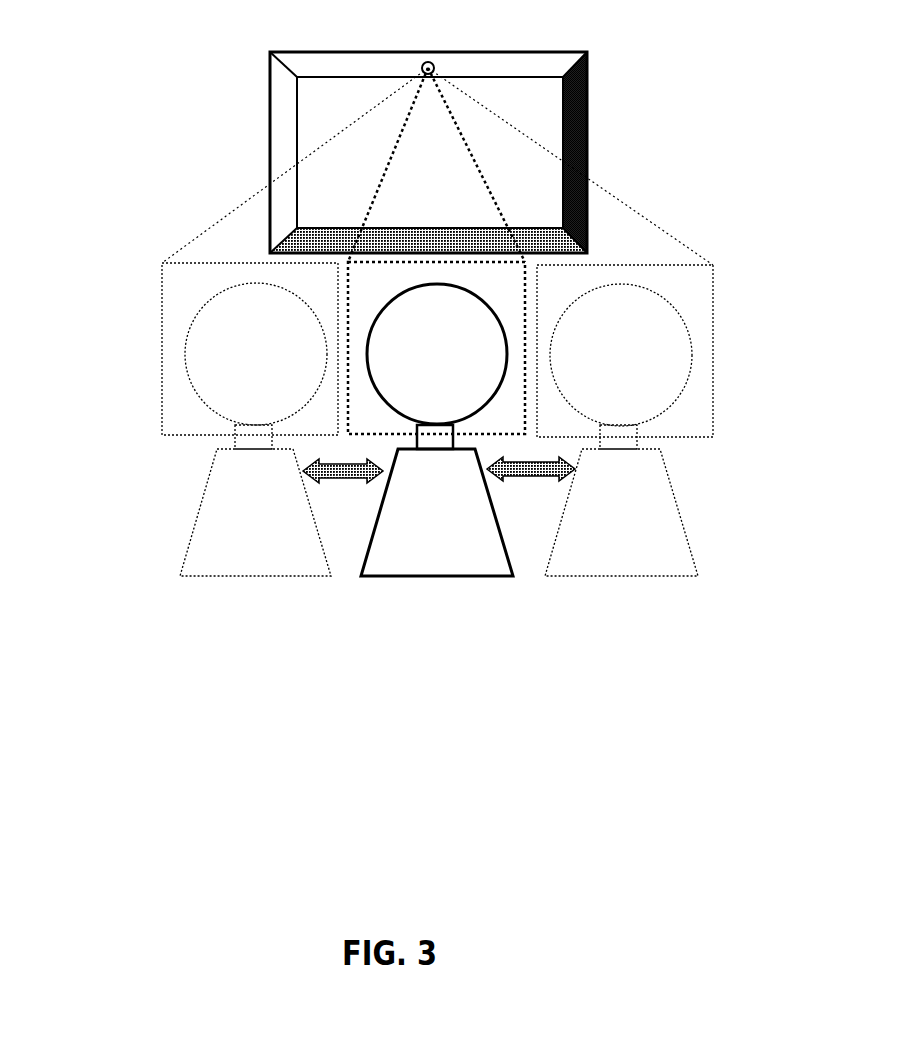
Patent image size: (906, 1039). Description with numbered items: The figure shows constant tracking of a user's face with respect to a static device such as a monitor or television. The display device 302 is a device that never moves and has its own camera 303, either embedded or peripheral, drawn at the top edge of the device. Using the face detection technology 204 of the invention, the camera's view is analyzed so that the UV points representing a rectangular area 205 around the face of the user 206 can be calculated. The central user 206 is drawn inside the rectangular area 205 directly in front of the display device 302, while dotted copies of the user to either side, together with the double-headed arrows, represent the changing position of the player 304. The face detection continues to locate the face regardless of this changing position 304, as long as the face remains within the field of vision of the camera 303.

The display device 302 is at (321, 101).
The camera 303 is at (421, 63).
The face detection technology 204 is at (441, 188).
The rectangular area 205 is at (501, 282).
The user 206 is at (422, 543).
The changing position of the player 304 is at (533, 490).